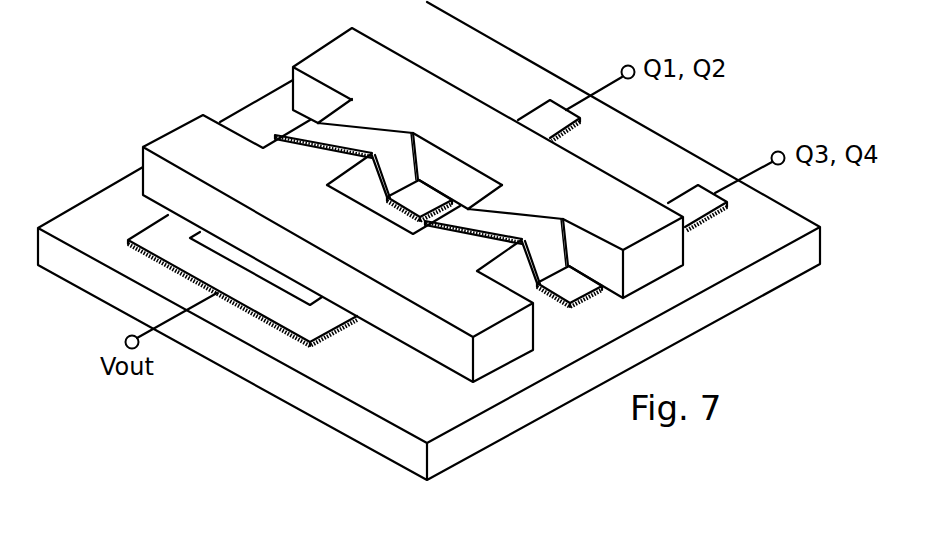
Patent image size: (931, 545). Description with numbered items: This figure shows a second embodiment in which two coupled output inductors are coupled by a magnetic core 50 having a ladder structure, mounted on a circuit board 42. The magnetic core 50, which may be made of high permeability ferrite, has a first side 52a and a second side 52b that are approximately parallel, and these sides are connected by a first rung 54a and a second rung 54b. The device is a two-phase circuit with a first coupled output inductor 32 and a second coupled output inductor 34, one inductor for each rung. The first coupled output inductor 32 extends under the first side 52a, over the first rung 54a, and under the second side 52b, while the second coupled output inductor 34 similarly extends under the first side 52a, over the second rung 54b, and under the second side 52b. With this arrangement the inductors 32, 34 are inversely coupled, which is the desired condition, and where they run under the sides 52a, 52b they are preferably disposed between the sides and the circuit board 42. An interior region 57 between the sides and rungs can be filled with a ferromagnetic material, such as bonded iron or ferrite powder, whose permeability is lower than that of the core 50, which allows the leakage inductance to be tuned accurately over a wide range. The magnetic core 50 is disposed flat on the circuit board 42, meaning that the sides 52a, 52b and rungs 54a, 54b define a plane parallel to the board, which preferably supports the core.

The circuit board 42 is at (505, 63).
The magnetic core 50 is at (327, 43).
The first side 52a is at (488, 163).
The second side 52b is at (338, 248).
The first coupled output inductor 32 is at (352, 140).
The second coupled output inductor 34 is at (510, 226).
The first rung 54a is at (328, 163).
The second rung 54b is at (474, 254).
The interior region 57 is at (400, 222).